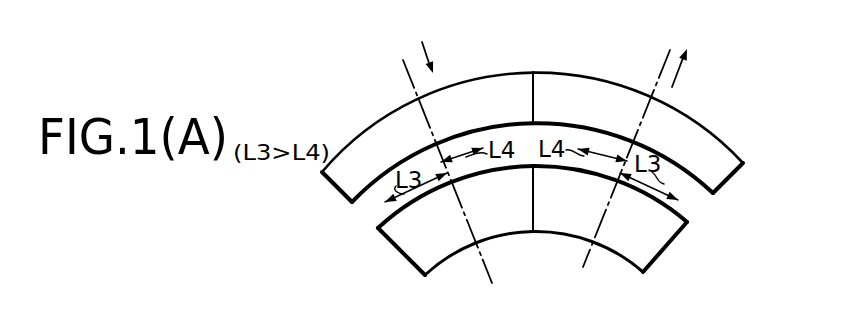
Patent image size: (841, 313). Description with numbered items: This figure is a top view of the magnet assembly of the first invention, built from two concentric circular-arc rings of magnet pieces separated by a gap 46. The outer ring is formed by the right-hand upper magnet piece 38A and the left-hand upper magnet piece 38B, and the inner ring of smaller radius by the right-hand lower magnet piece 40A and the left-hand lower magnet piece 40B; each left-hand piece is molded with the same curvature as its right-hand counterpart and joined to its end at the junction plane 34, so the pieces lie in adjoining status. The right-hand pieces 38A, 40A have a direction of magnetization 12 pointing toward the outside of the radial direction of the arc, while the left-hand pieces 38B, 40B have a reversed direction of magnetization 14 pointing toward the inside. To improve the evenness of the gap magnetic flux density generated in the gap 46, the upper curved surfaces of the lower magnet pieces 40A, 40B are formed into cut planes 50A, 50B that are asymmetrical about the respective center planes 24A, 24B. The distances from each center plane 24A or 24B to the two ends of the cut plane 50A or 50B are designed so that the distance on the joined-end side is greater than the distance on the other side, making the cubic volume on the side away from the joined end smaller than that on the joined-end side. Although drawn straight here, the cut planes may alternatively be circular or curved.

The direction of magnetization 12 is at (676, 76).
The direction of magnetization 14 is at (435, 50).
The center plane 24A is at (663, 68).
The center plane 24B is at (405, 68).
The junction plane 34 is at (535, 84).
The upper magnet piece 38A is at (712, 158).
The upper magnet piece 38B is at (347, 152).
The lower magnet piece 40A is at (652, 250).
The lower magnet piece 40B is at (400, 246).
The gap 46 is at (702, 203).
The cut plane 50A is at (678, 209).
The cut plane 50B is at (400, 208).